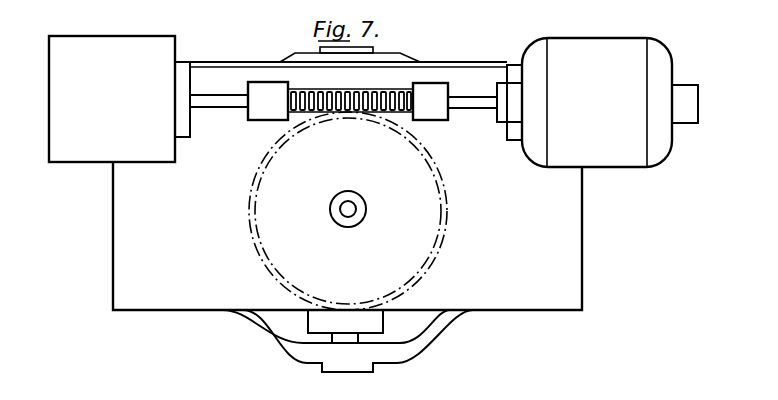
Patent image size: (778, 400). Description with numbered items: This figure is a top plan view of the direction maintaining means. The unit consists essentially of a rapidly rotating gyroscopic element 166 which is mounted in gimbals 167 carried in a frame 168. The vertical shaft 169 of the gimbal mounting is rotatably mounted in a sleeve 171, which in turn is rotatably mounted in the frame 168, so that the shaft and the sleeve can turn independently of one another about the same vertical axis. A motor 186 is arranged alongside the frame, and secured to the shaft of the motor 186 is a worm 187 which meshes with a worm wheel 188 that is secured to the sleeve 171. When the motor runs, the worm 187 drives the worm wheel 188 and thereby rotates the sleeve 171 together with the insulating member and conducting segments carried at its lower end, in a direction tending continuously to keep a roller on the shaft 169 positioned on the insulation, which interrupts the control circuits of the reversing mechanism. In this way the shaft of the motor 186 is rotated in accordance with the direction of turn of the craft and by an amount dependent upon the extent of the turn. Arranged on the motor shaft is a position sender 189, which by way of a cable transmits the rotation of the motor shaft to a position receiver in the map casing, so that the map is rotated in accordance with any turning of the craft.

The gyroscopic element 166 is at (372, 319).
The gimbals 167 is at (470, 322).
The frame 168 is at (582, 268).
The vertical shaft 169 is at (348, 209).
The sleeve 171 is at (336, 216).
The motor 186 is at (573, 102).
The worm 187 is at (362, 85).
The worm wheel 188 is at (287, 130).
The position sender 189 is at (148, 99).